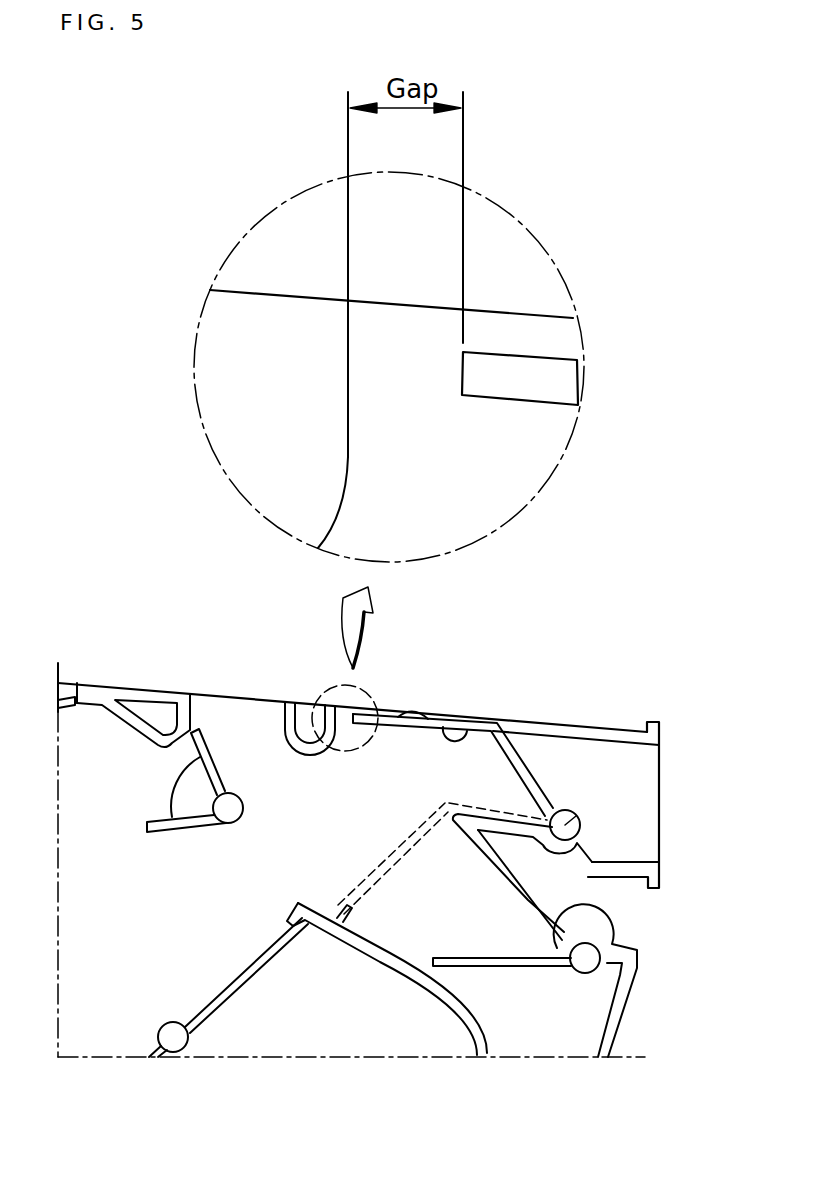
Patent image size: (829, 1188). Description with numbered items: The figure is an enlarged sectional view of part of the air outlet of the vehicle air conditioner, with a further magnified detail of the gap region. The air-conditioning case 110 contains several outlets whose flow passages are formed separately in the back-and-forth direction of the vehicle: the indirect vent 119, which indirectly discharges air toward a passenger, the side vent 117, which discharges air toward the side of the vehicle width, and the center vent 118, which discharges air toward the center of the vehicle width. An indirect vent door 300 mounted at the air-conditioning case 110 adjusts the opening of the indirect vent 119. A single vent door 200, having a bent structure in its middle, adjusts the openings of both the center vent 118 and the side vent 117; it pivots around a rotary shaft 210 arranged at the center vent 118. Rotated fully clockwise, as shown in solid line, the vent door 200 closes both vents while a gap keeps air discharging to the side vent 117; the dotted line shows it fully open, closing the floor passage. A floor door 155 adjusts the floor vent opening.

The air-conditioning case 110 is at (282, 342).
The side vent 117 is at (413, 714).
The center vent 118 is at (640, 805).
The indirect vent 119 is at (250, 722).
The floor door 155 is at (538, 965).
The vent door 200 is at (508, 377).
The rotary shaft 210 is at (579, 816).
The indirect vent door 300 is at (200, 732).